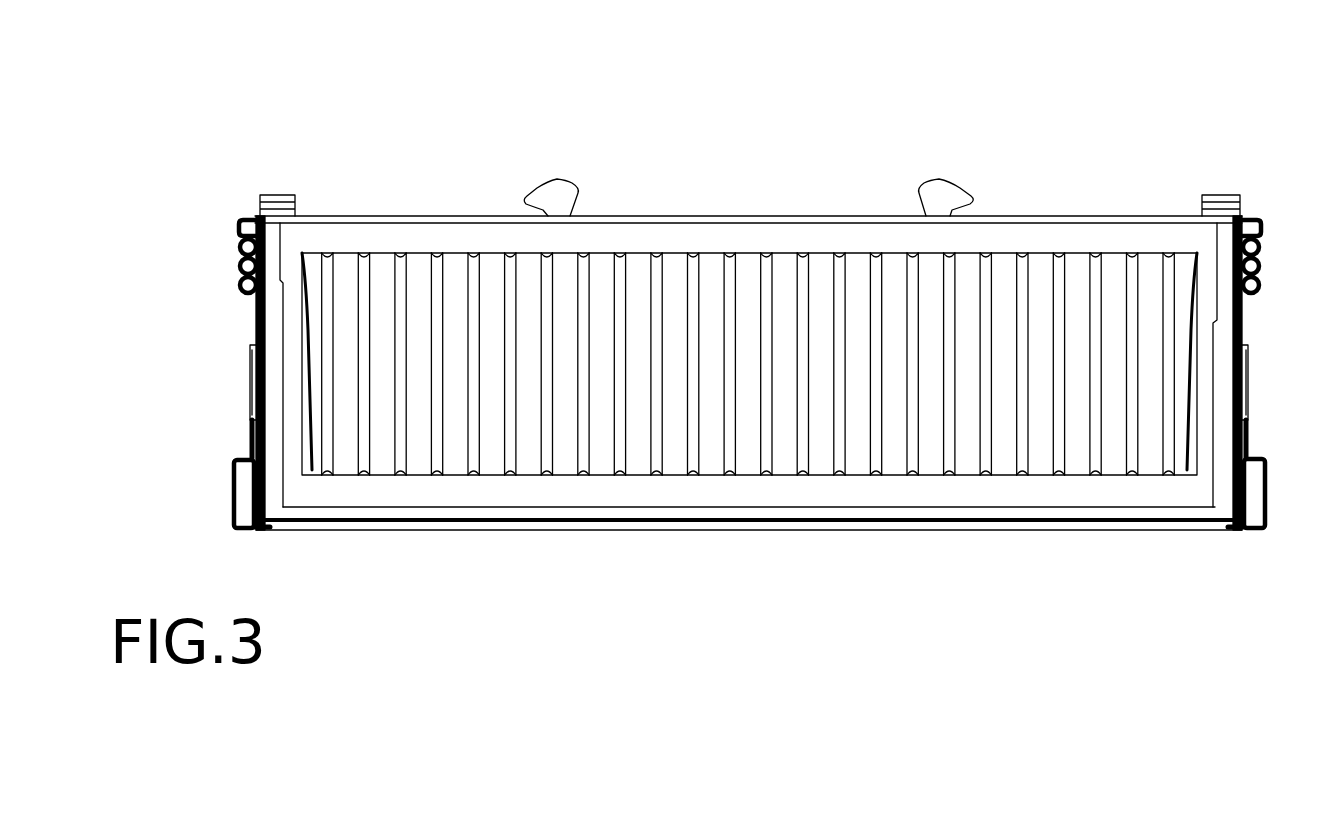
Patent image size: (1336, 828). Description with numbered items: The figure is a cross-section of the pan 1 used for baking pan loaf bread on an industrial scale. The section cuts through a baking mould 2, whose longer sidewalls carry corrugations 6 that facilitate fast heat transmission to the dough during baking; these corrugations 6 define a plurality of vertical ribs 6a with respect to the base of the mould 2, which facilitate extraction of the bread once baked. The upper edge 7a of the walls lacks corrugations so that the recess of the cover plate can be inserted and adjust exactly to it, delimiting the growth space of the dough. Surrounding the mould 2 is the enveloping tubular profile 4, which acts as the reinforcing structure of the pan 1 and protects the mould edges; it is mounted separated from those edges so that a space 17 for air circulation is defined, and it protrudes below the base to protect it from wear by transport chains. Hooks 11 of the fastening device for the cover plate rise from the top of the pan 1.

The pan 1 is at (317, 180).
The baking mould 2 is at (685, 495).
The enveloping tubular profile 4 is at (235, 490).
The corrugations 6 is at (965, 240).
The vertical ribs 6a is at (718, 300).
The upper edge of the walls 7a is at (365, 237).
The hook 11 is at (562, 190).
The space for air circulation 17 is at (252, 455).